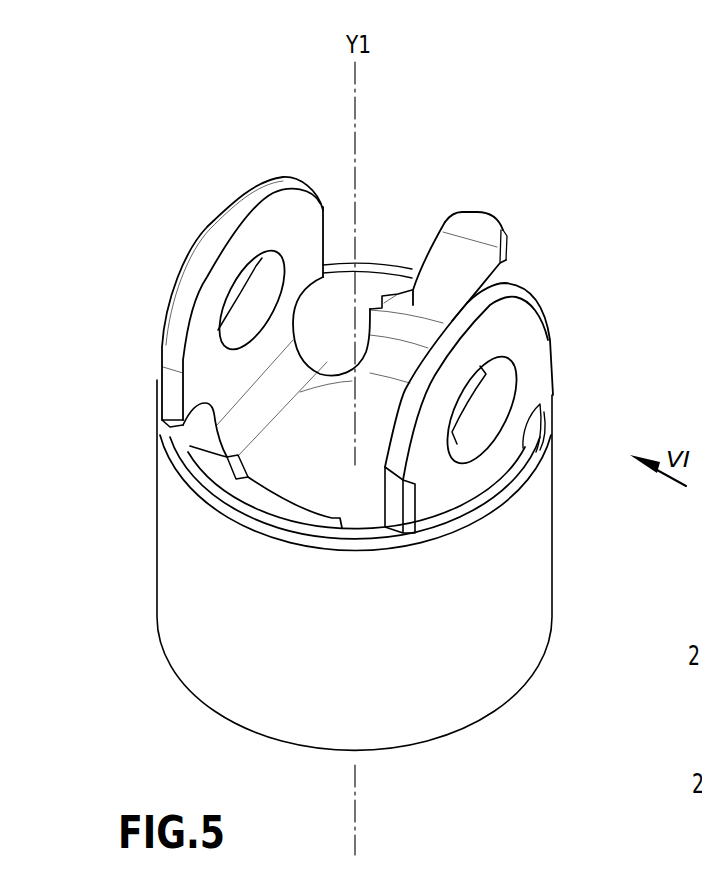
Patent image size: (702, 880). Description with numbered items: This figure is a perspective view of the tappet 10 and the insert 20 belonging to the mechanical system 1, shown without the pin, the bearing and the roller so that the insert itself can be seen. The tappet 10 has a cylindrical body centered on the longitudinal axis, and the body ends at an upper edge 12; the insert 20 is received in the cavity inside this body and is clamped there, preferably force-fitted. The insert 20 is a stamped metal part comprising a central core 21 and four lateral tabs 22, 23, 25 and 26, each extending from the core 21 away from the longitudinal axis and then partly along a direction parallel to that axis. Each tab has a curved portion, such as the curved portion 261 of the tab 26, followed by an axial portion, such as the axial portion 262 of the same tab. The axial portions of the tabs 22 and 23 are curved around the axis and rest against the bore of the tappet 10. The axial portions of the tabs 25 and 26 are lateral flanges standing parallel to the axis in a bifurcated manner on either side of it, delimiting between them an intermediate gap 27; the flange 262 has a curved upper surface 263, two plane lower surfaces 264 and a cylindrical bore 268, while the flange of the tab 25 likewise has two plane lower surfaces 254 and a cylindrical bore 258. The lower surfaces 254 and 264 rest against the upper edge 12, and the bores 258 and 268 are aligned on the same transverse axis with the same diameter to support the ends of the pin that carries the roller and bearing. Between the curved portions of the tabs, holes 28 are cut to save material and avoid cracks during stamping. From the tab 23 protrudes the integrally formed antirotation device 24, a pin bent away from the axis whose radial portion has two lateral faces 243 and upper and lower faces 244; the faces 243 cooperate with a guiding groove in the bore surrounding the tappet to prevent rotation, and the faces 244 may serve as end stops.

The system 1 is at (123, 173).
The tappet 10 is at (203, 658).
The upper edge 12 is at (217, 500).
The insert 20 is at (578, 227).
The central core 21 is at (327, 482).
The lateral tab 22 is at (267, 502).
The lateral tab 23 is at (397, 322).
The antirotation device 24 is at (478, 226).
The lateral tab 25 is at (525, 337).
The lateral tab 26 is at (233, 173).
The intermediate gap 27 is at (338, 187).
The holes 28 is at (337, 368).
The lateral faces 243 is at (445, 221).
The upper and lower faces 244 is at (468, 217).
The plane lower surfaces 254 is at (547, 417).
The cylindrical bore 258 is at (520, 383).
The curved portion 261 is at (283, 380).
The axial portion 262 is at (177, 342).
The curved upper surface 263 is at (223, 230).
The plane lower surfaces 264 is at (170, 428).
The cylindrical bore 268 is at (232, 330).